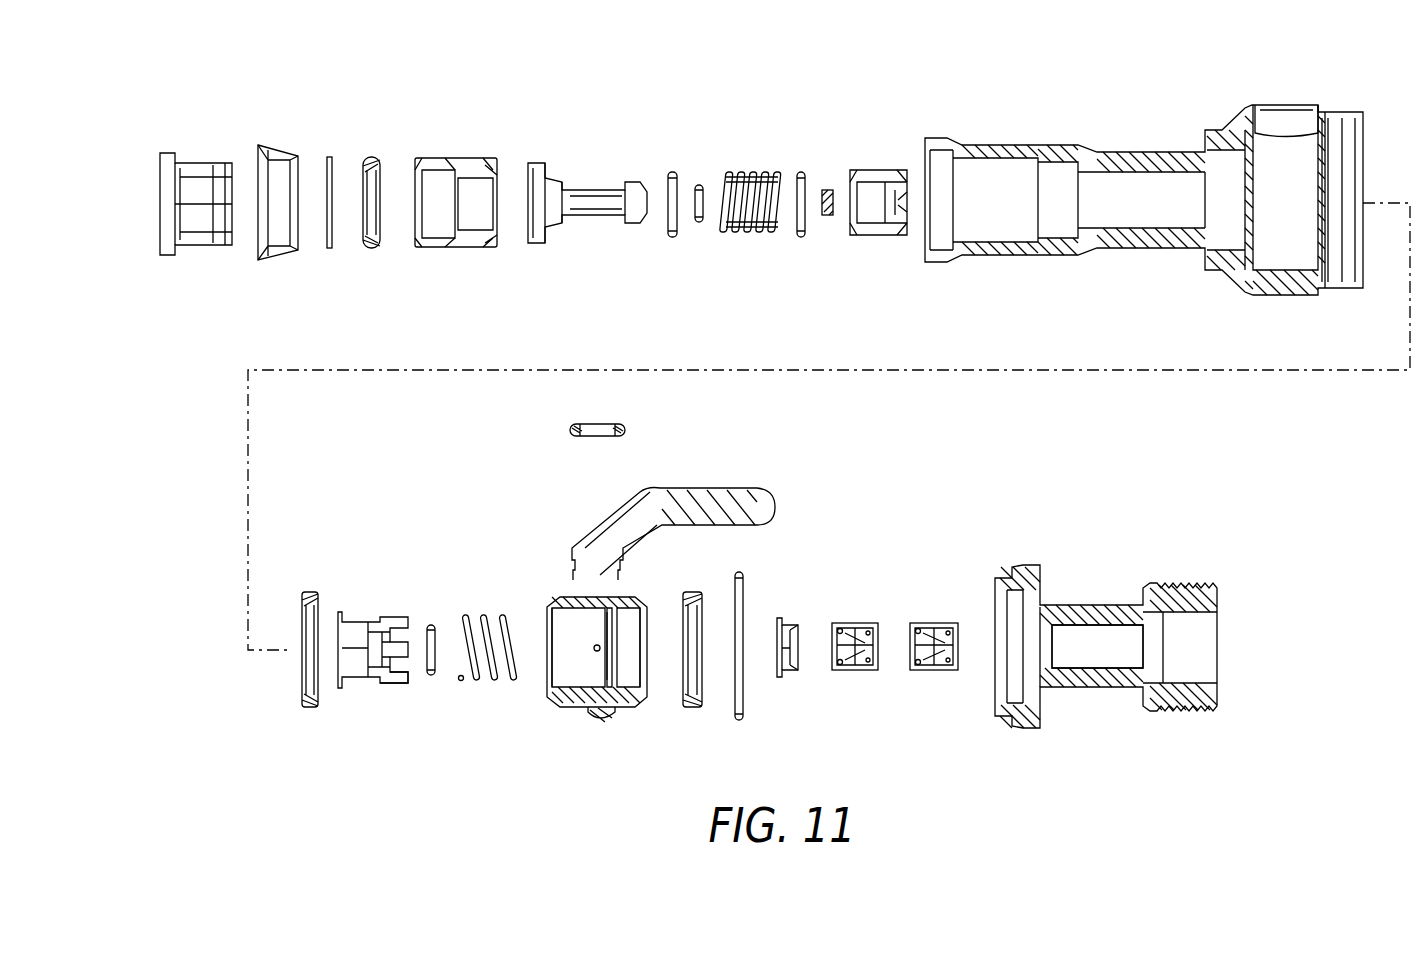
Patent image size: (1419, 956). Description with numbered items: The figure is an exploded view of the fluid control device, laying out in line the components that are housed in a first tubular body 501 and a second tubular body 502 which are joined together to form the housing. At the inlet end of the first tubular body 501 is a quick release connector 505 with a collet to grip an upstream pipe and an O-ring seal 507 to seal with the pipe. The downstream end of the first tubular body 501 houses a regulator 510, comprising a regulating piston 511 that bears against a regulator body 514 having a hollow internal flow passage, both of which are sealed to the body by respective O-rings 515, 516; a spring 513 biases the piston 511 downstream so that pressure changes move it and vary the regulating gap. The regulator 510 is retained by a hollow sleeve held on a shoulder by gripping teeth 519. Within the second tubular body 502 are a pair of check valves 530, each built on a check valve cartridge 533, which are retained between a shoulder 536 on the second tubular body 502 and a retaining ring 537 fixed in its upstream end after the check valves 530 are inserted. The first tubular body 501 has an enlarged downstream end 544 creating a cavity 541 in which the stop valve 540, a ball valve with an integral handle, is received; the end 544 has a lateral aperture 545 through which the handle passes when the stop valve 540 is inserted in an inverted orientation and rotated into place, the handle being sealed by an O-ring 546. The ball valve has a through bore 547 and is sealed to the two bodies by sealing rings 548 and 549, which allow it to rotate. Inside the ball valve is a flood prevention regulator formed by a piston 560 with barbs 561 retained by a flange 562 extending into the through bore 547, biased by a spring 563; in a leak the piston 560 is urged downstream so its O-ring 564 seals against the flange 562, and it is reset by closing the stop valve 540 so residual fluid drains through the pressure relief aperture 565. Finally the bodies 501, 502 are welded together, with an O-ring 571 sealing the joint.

The first tubular body 501 is at (1060, 149).
The second tubular body 502 is at (1093, 606).
The quick release connector 505 is at (160, 135).
The O-ring seal 507 is at (372, 158).
The regulator 510 is at (528, 150).
The regulating piston 511 is at (894, 236).
The spring 513 is at (748, 240).
The regulator body 514 is at (580, 226).
The O-ring 515 is at (801, 240).
The O-ring 516 is at (673, 240).
The gripping teeth 519 is at (452, 247).
The check valve 530 is at (870, 597).
The check valve cartridge 533 is at (858, 672).
The shoulder 536 is at (1143, 668).
The retaining ring 537 is at (786, 678).
The stop valve 540 is at (546, 735).
The cavity 541 is at (1283, 248).
The enlarged downstream end 544 is at (1225, 300).
The lateral aperture 545 is at (1287, 110).
The O-ring 546 is at (556, 432).
The through bore 547 is at (586, 672).
The sealing ring 548 is at (311, 707).
The sealing ring 549 is at (692, 707).
The piston 560 is at (361, 620).
The barbs 561 is at (404, 680).
The flange 562 is at (602, 612).
The spring 563 is at (494, 684).
The O-ring 564 is at (431, 624).
The pressure relief aperture 565 is at (639, 672).
The O-ring 571 is at (739, 721).